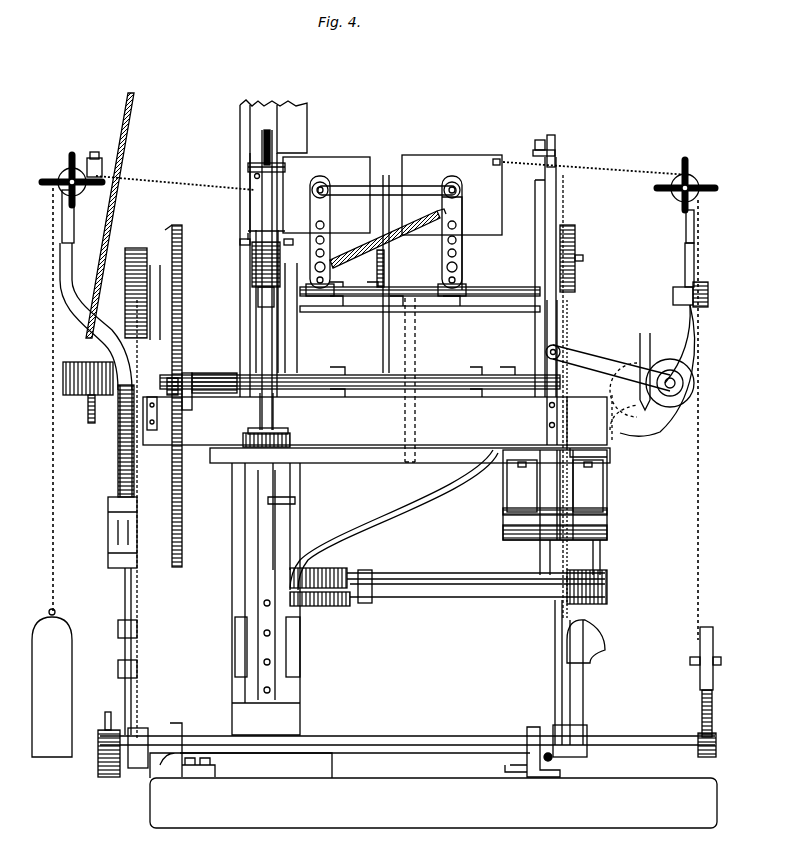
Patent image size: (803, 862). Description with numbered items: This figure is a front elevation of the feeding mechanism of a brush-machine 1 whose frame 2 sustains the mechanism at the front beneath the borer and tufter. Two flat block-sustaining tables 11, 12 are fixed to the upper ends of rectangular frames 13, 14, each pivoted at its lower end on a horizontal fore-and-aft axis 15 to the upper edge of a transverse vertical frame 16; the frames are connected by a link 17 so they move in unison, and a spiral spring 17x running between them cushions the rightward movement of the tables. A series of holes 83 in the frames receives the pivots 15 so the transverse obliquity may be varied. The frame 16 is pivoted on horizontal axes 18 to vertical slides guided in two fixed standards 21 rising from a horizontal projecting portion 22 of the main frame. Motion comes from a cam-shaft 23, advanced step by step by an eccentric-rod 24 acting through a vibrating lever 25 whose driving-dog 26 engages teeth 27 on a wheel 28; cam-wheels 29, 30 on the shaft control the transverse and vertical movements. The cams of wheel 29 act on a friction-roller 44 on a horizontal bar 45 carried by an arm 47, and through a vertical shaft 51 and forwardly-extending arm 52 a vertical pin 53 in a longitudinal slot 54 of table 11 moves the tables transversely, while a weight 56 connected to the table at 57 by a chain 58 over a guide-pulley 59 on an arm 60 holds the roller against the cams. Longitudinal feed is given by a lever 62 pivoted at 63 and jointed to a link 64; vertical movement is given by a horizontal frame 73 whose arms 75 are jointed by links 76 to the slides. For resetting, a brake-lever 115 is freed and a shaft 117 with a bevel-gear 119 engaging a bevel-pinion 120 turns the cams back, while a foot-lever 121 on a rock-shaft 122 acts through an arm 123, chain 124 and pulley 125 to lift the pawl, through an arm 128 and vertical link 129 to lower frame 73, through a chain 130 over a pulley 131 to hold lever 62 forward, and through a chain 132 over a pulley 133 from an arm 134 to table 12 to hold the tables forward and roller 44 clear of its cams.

The brush-machine 1 is at (433, 740).
The frame 2 is at (338, 453).
The block-sustaining table 11 is at (326, 195).
The block-sustaining table 12 is at (452, 195).
The rectangular frame 13 is at (310, 213).
The rectangular frame 14 is at (456, 222).
The horizontal fore-and-aft axes 15 is at (331, 266).
The transverse vertical frame 16 is at (485, 378).
The link 17 is at (404, 188).
The spiral spring 17x is at (410, 226).
The horizontal axes 18 is at (262, 308).
The fixed standards 21 is at (270, 330).
The horizontal projecting portion 22 is at (376, 430).
The cam-shaft 23 is at (206, 377).
The eccentric-rod 24 is at (133, 150).
The vibrating lever 25 is at (66, 370).
The driving-dog 26 is at (95, 340).
The teeth 27 is at (118, 467).
The wheel 28 is at (118, 438).
The cam-wheel 29 is at (172, 250).
The cam-wheel 30 is at (378, 328).
The friction-roller 44 is at (173, 398).
The horizontal bar 45 is at (187, 376).
The arm 47 is at (263, 420).
The vertical shaft 51 is at (262, 291).
The forwardly-extending arm 52 is at (252, 253).
The vertical pin 53 is at (262, 149).
The longitudinal slot 54 is at (255, 178).
The weight 56 is at (52, 683).
The connection point 57 is at (246, 199).
The chain 58 is at (164, 186).
The guide-pulley 59 is at (64, 170).
The arm 60 is at (62, 215).
The lever 62 is at (556, 207).
The pivot 63 is at (510, 527).
The link 64 is at (556, 157).
The horizontal frame 73 is at (447, 533).
The arms 75 is at (342, 558).
The links 76 is at (272, 541).
The holes 83 is at (326, 232).
The brake-lever 115 is at (110, 546).
The shaft 117 is at (690, 372).
The bevel-gear 119 is at (697, 389).
The bevel-pinion 120 is at (646, 338).
The foot-lever 121 is at (578, 688).
The horizontal rock-shaft 122 is at (652, 746).
The forwardly-extending arm 123 is at (113, 725).
The chain 124 is at (138, 590).
The pulley 125 is at (125, 263).
The rearwardly-extending arm 128 is at (549, 762).
The vertical link 129 is at (556, 688).
The chain 130 is at (577, 292).
The pulley 131 is at (578, 266).
The chain 132 is at (624, 168).
The pulley 133 is at (700, 186).
The arm 134 is at (713, 708).